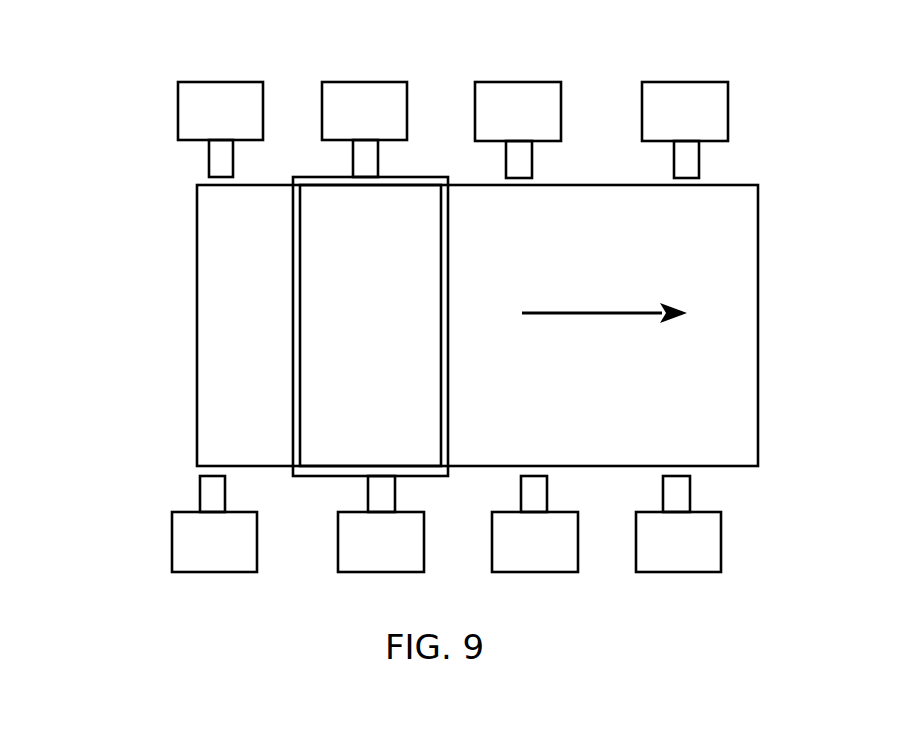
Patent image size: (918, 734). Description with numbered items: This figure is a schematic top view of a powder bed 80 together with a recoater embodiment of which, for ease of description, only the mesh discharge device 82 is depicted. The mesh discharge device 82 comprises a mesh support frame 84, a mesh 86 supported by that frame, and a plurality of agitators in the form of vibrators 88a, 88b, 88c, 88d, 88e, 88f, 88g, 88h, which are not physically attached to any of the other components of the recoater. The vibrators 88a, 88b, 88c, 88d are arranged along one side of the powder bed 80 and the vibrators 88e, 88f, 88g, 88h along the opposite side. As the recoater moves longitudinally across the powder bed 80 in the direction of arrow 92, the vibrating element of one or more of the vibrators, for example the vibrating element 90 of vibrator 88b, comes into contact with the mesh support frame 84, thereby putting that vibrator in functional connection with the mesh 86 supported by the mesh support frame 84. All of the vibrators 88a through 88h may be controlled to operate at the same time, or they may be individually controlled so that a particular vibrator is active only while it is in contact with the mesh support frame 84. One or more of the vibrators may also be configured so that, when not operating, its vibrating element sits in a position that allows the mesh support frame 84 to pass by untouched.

The powder bed 80 is at (238, 297).
The mesh discharge device 82 is at (98, 110).
The mesh support frame 84 is at (298, 343).
The mesh 86 is at (345, 408).
The vibrator 88a is at (227, 85).
The vibrator 88b is at (382, 80).
The vibrator 88c is at (549, 80).
The vibrator 88d is at (698, 80).
The vibrator 88e is at (230, 573).
The vibrator 88f is at (397, 573).
The vibrator 88g is at (550, 572).
The vibrator 88h is at (700, 570).
The vibrating element 90 is at (367, 162).
The arrow 92 is at (580, 308).